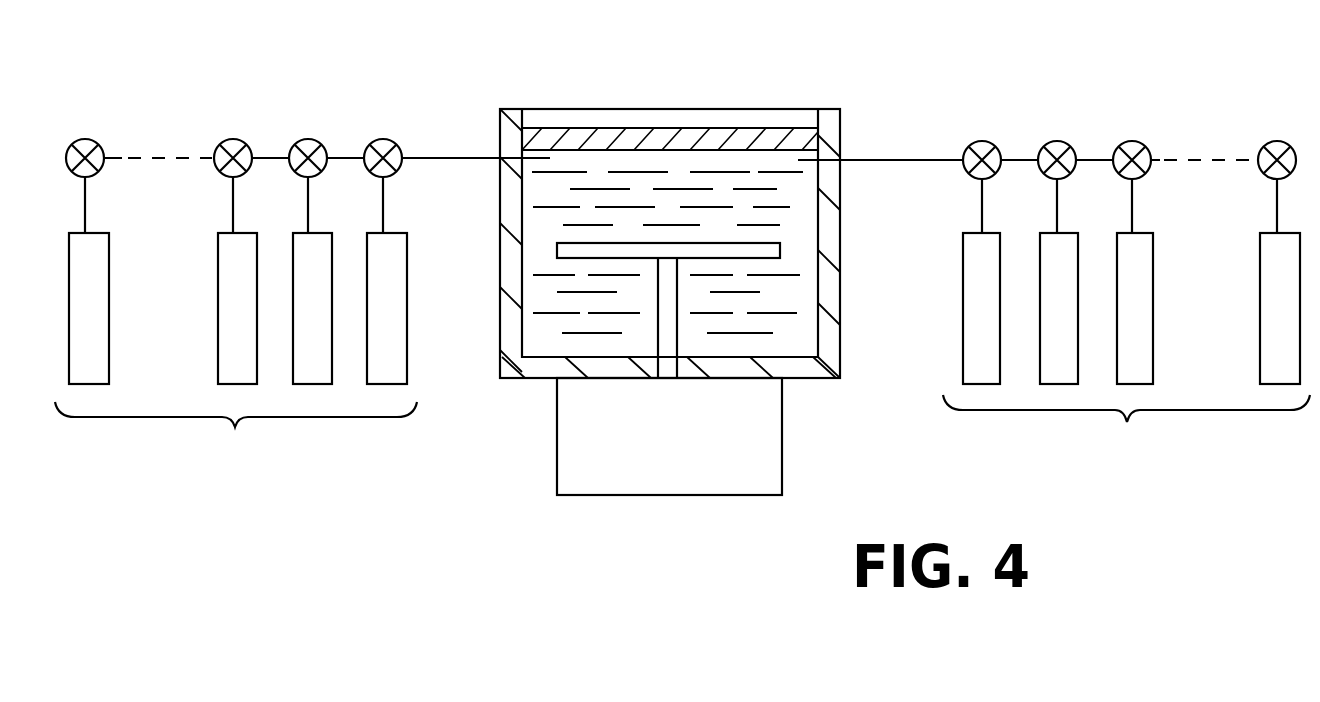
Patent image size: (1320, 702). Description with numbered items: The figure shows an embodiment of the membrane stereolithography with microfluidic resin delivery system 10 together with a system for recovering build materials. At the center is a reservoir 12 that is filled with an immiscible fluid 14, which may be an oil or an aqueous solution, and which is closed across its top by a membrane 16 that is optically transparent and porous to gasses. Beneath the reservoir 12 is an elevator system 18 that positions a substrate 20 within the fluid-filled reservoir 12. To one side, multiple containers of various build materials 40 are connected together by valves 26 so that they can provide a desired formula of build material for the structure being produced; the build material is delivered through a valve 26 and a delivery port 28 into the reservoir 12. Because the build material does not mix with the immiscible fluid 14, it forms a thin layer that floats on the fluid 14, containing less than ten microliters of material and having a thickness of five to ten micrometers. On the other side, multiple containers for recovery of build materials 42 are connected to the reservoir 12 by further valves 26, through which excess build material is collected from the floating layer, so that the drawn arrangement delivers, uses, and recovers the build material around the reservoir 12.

The membrane stereolithography with microfluidic resin delivery system 10 is at (797, 46).
The reservoir 12 is at (845, 290).
The immiscible fluid 14 is at (772, 333).
The membrane 16 is at (615, 128).
The elevator system 18 is at (782, 458).
The substrate 20 is at (771, 237).
The valves 26 is at (378, 142).
The delivery port 28 is at (461, 158).
The multiple containers of various build materials 40 is at (236, 325).
The multiple containers for recovery of build materials 42 is at (1126, 323).